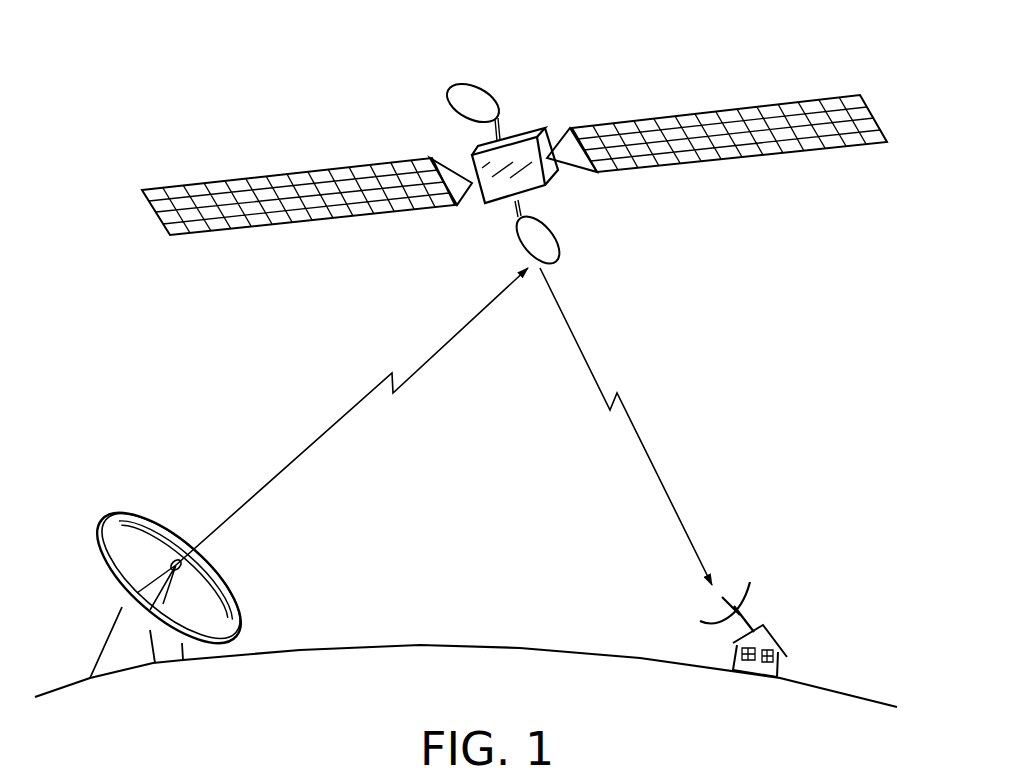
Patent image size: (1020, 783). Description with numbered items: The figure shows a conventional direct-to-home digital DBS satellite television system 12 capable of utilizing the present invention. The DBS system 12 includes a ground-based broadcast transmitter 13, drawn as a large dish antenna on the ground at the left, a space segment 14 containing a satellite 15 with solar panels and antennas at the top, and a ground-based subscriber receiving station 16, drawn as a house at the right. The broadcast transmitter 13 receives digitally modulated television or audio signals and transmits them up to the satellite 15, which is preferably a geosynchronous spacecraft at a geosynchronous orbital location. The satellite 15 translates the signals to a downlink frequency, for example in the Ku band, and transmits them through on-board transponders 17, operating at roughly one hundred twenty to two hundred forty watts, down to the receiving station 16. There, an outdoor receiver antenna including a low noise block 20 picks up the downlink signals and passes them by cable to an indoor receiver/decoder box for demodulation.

The digital DBS system 12 is at (110, 261).
The ground-based broadcast transmitter 13 is at (117, 498).
The space segment 14 is at (515, 64).
The satellite 15 is at (533, 127).
The ground-based subscriber receiving station 16 is at (781, 615).
The on-board transponders 17 is at (561, 243).
The low noise block (LNB) 20 is at (711, 618).